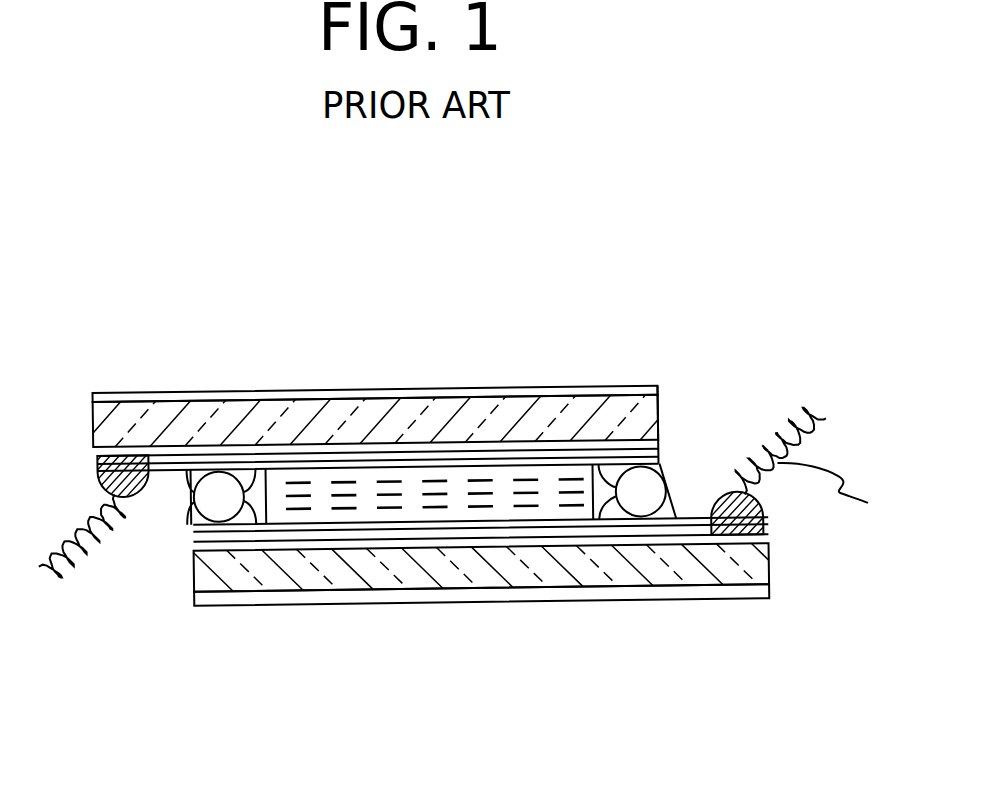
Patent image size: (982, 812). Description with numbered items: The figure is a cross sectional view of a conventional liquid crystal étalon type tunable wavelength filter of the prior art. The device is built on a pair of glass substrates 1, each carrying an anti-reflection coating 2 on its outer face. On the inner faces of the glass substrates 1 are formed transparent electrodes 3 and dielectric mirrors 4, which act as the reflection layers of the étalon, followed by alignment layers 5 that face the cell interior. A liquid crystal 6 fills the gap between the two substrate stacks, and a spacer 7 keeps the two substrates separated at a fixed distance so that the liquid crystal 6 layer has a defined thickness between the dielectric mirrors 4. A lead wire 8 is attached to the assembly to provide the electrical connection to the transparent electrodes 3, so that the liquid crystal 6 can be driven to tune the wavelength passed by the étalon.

The glass substrate 1 is at (340, 413).
The anti-reflection coating 2 is at (238, 399).
The transparent electrode 3 is at (458, 446).
The dielectric mirror 4 is at (493, 462).
The alignment layer 5 is at (541, 472).
The liquid crystal 6 is at (575, 478).
The spacer 7 is at (653, 502).
The lead wire 8 is at (834, 502).